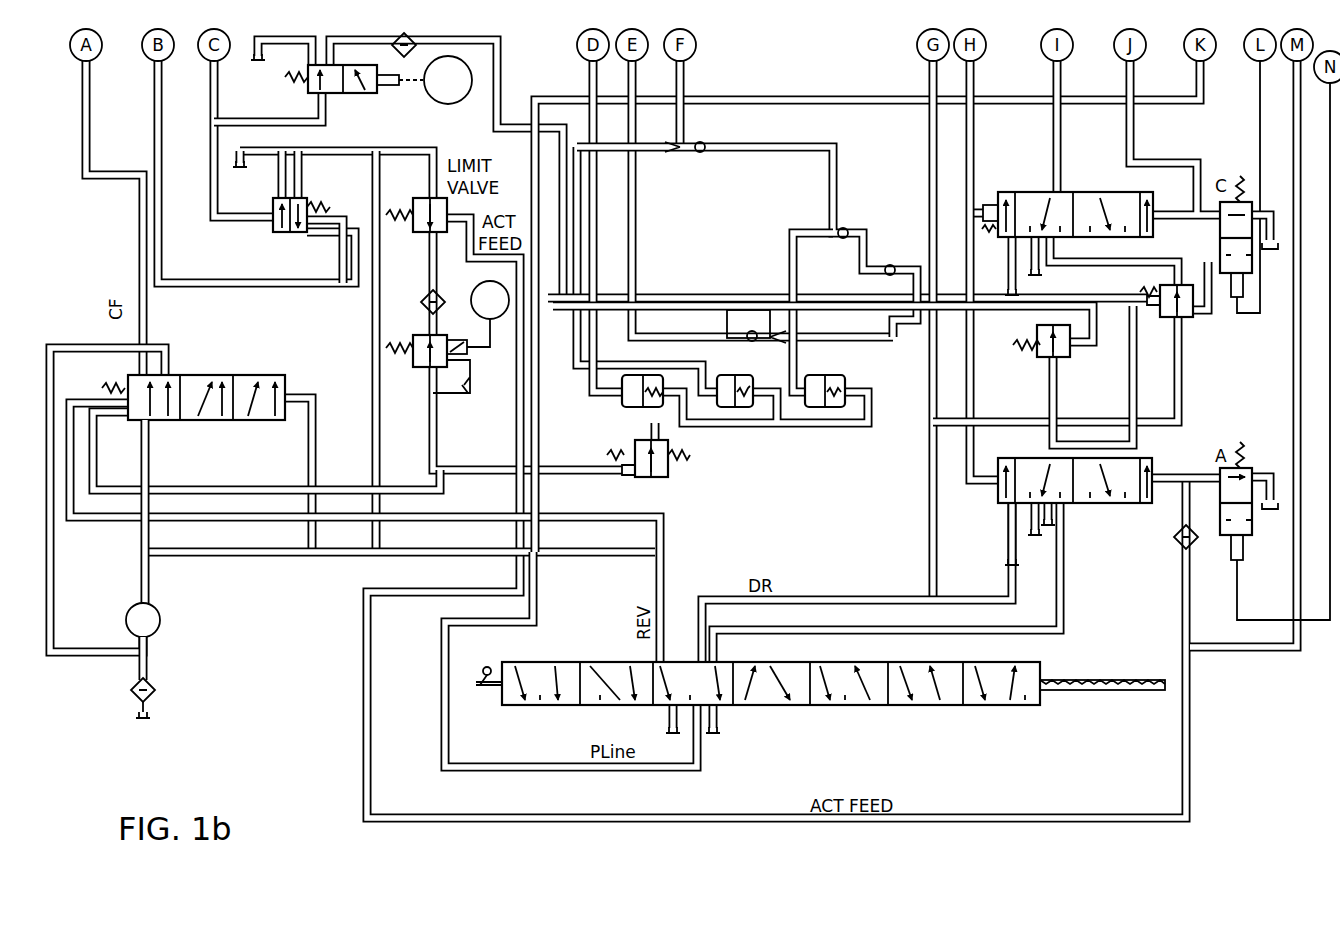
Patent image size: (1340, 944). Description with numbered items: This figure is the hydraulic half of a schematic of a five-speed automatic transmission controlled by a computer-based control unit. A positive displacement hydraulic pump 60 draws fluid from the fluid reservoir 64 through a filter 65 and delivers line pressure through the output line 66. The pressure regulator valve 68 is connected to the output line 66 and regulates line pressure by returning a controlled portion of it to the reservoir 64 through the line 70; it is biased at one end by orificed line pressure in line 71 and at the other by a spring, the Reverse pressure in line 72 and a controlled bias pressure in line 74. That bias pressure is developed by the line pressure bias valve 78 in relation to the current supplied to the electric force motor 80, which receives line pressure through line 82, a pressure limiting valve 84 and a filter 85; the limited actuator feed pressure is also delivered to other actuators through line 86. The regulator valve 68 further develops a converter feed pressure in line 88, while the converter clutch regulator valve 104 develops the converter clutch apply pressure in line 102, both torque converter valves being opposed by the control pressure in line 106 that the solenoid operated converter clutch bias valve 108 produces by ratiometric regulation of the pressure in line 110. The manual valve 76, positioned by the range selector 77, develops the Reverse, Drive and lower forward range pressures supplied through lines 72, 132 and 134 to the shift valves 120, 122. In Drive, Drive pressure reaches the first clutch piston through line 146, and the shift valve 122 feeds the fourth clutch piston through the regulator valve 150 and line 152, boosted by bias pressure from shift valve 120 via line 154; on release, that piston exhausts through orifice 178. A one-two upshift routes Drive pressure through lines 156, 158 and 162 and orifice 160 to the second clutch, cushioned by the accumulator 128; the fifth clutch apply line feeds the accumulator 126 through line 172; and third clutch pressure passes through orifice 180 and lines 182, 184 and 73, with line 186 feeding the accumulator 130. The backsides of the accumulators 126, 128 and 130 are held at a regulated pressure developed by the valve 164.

The hydraulic pump 60 is at (160, 622).
The fluid reservoir 64 is at (150, 722).
The filter 65 is at (158, 690).
The output line 66 is at (262, 560).
The pressure regulator valve 68 is at (205, 422).
The line 70 is at (56, 575).
The line 71 is at (292, 392).
The line 72 is at (203, 514).
The line 73 is at (686, 78).
The line 74 is at (245, 490).
The manual valve 76 is at (850, 707).
The transmission range selector 77 is at (478, 690).
The line pressure bias valve 78 is at (425, 378).
The electric force motor 80 is at (468, 355).
The line 82 is at (374, 322).
The pressure limiting valve 84 is at (428, 255).
The filter 85 is at (420, 302).
The line 86 is at (366, 682).
The line 88 is at (140, 258).
The line 102 is at (155, 124).
The TCC regulator valve 104 is at (272, 236).
The line 106 is at (292, 122).
The TCC bias valve 108 is at (322, 100).
The line 110 is at (504, 80).
The shift valve 120 is at (1142, 458).
The shift valve 122 is at (1112, 188).
The accumulator 126 is at (652, 375).
The accumulator 128 is at (756, 408).
The accumulator 130 is at (828, 374).
The DR pressure supply line 132 is at (1182, 350).
The line 134 is at (895, 628).
The line 146 is at (930, 120).
The regulator valve 150 is at (1188, 322).
The line 152 is at (1052, 164).
The line 154 is at (1135, 355).
The line 156 is at (1010, 378).
The line 158 is at (935, 345).
The orifice 160 is at (748, 308).
The line 162 is at (636, 230).
The valve 164 is at (670, 478).
The line 172 is at (597, 167).
The orifice 178 is at (1060, 252).
The orifice 180 is at (960, 258).
The line 182 is at (862, 233).
The line 184 is at (742, 148).
The line 186 is at (870, 264).